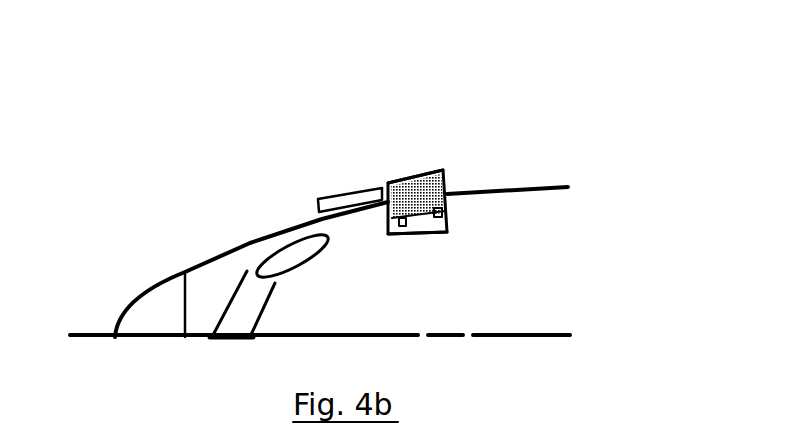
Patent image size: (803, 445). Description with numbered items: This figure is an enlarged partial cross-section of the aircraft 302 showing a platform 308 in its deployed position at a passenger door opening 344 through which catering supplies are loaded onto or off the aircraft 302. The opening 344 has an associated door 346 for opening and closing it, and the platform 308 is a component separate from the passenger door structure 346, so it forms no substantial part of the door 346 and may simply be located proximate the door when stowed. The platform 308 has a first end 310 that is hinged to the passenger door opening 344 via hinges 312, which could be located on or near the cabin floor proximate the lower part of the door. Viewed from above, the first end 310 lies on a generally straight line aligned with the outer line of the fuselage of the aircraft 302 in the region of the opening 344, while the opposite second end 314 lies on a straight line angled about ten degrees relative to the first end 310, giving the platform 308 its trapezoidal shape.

The aircraft 302 is at (560, 170).
The platform 308 is at (425, 168).
The first end 310 is at (427, 232).
The hinges 312 is at (389, 233).
The second end 314 is at (386, 186).
The passenger door opening 344 is at (447, 228).
The passenger door 346 is at (338, 185).